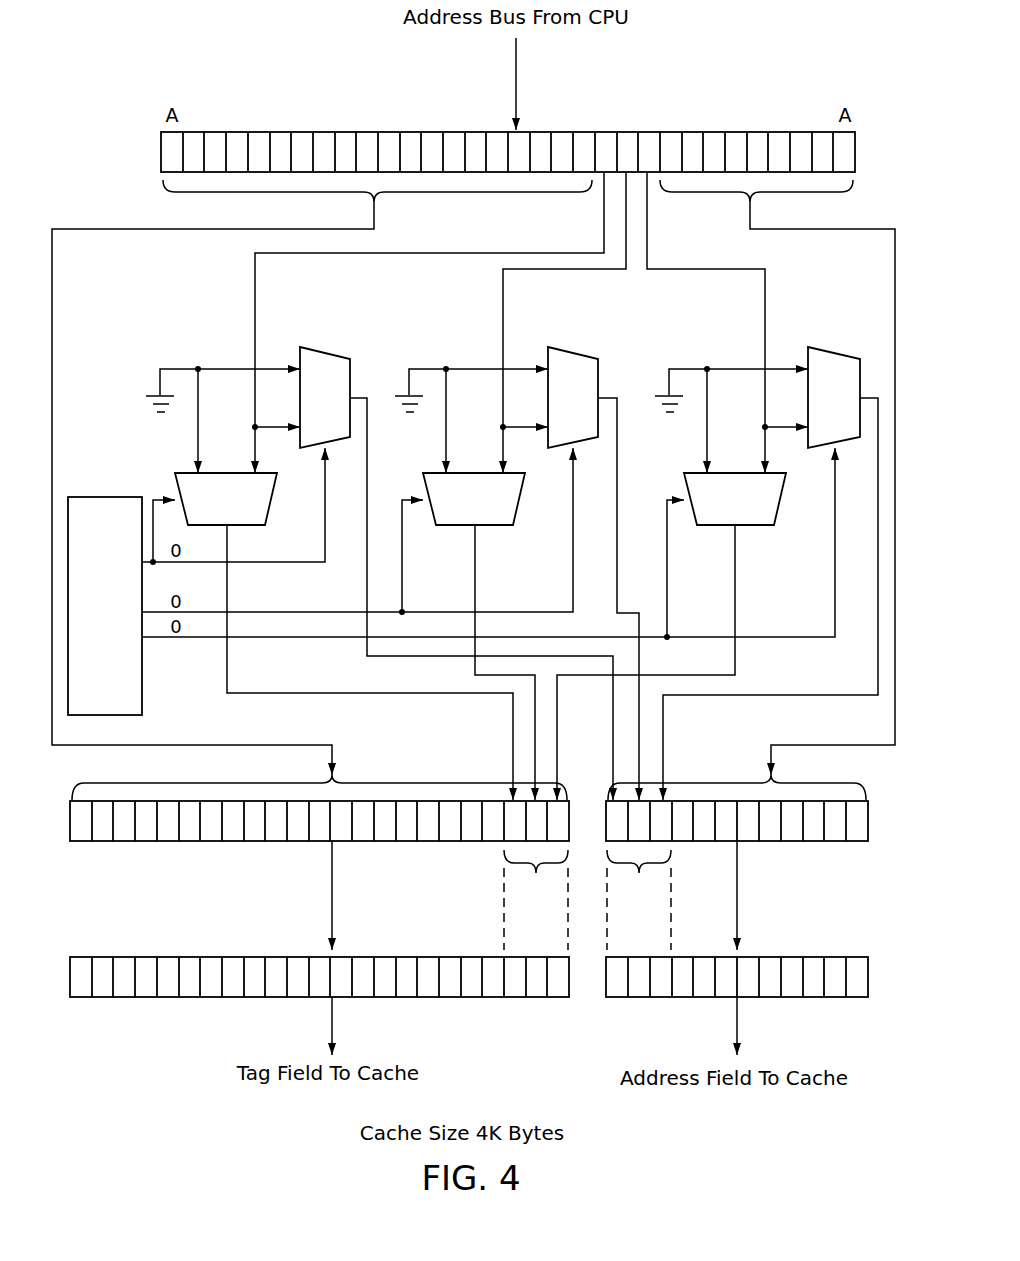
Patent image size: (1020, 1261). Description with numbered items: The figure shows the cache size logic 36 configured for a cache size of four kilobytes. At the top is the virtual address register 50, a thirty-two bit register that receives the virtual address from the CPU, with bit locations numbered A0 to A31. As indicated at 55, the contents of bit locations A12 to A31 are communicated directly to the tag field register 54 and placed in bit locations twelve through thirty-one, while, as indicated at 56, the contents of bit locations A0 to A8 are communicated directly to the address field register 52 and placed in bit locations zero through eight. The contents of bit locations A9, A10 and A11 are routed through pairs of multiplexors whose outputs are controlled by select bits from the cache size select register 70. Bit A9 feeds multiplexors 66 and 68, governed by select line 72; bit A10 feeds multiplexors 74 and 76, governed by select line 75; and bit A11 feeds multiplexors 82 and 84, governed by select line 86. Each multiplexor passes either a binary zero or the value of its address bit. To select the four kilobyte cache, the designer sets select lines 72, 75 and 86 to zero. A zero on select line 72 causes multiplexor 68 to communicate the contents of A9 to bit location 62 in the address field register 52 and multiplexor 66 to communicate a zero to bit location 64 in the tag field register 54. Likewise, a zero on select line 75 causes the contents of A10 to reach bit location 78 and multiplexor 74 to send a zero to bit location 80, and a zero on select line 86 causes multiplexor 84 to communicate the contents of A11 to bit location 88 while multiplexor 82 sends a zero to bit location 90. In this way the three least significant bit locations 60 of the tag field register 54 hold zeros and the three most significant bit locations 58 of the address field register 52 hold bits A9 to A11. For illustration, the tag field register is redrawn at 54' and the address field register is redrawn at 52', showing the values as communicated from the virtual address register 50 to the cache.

The address translation circuit 36 is at (832, 63).
The virtual address register 50 is at (858, 150).
The direct communication path of bits A12–A31 55 is at (52, 290).
The direct communication path of bits A0–A8 56 is at (895, 271).
The multiplexor 84 is at (327, 351).
The multiplexor 76 is at (575, 351).
The multiplexor 68 is at (833, 351).
The multiplexor 82 is at (272, 494).
The multiplexor 74 is at (520, 494).
The multiplexor 66 is at (781, 494).
The cache size select register 70 is at (84, 497).
The select line 86 is at (252, 565).
The select line 75 is at (378, 610).
The select line 72 is at (270, 640).
The bit location 90 is at (508, 799).
The bit location 80 is at (540, 799).
The bit location 64 is at (562, 799).
The bit location 88 is at (612, 800).
The bit location 78 is at (648, 800).
The bit location 62 is at (669, 800).
The tag field register 54 is at (319, 799).
The address field register 52 is at (754, 801).
The three least significant bit locations of tag field register 60 is at (536, 900).
The three most significant bit locations of address field register 58 is at (639, 900).
The redrawn tag field register 54' is at (319, 950).
The redrawn address field register 52' is at (752, 957).